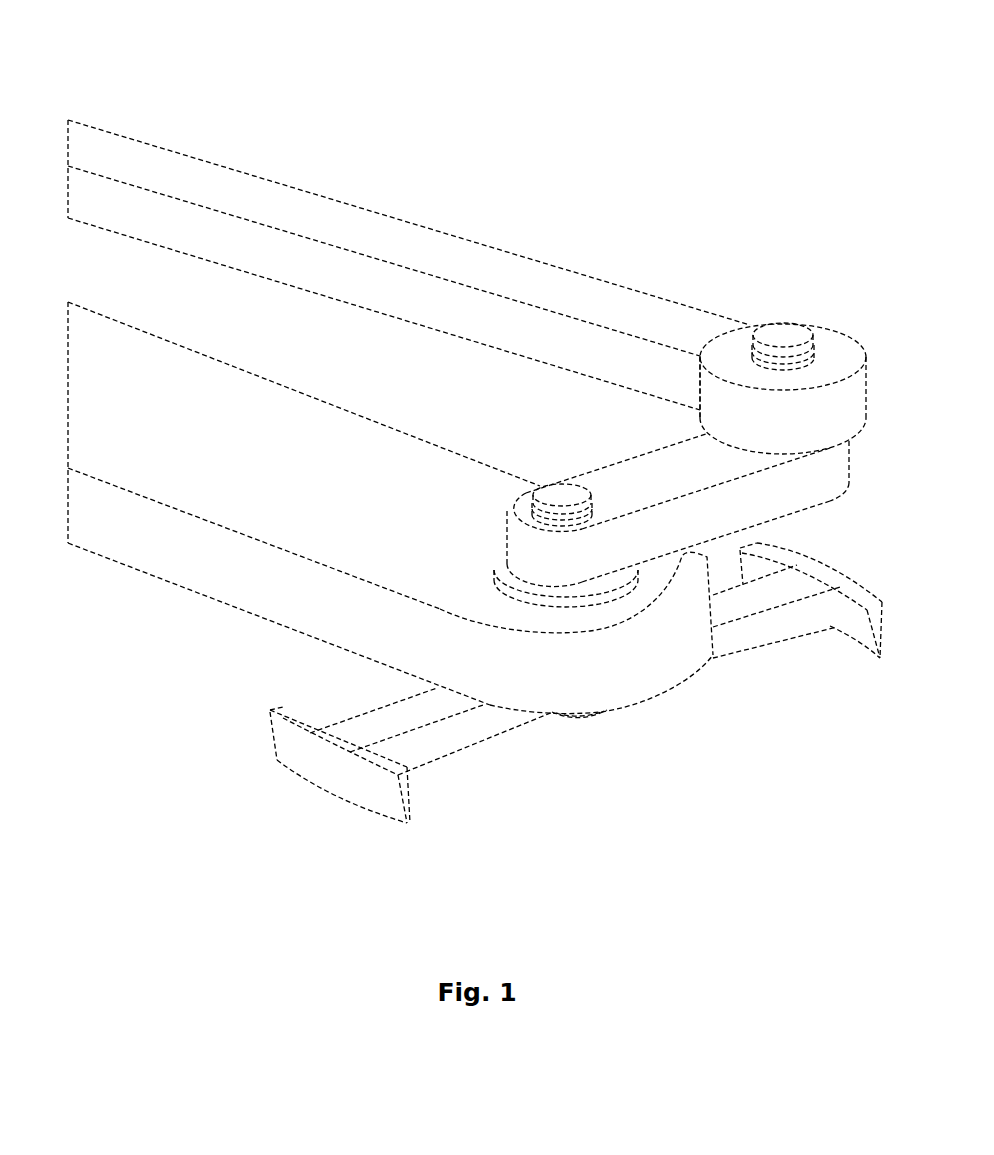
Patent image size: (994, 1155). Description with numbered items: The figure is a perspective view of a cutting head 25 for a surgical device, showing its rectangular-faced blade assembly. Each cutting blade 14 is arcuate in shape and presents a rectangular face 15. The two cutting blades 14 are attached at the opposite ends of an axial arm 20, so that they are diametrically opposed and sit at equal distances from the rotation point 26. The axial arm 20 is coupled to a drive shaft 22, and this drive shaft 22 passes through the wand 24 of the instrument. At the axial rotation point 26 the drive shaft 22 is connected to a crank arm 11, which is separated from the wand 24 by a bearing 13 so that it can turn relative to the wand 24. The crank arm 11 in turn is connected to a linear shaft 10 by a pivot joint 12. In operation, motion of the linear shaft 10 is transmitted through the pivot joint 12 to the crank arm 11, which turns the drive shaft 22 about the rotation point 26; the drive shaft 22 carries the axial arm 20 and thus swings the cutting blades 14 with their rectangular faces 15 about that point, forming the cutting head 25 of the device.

The linear shaft 10 is at (180, 150).
The crank arm 11 is at (637, 456).
The pivot joint 12 is at (810, 327).
The bearing 13 is at (617, 600).
The cutting blade 14 is at (291, 801).
The rectangular face 15 is at (300, 763).
The axial arm 20 is at (460, 750).
The drive shaft 22 is at (549, 487).
The wand 24 is at (153, 575).
The cutting head 25 is at (817, 742).
The rotation point 26 is at (535, 490).